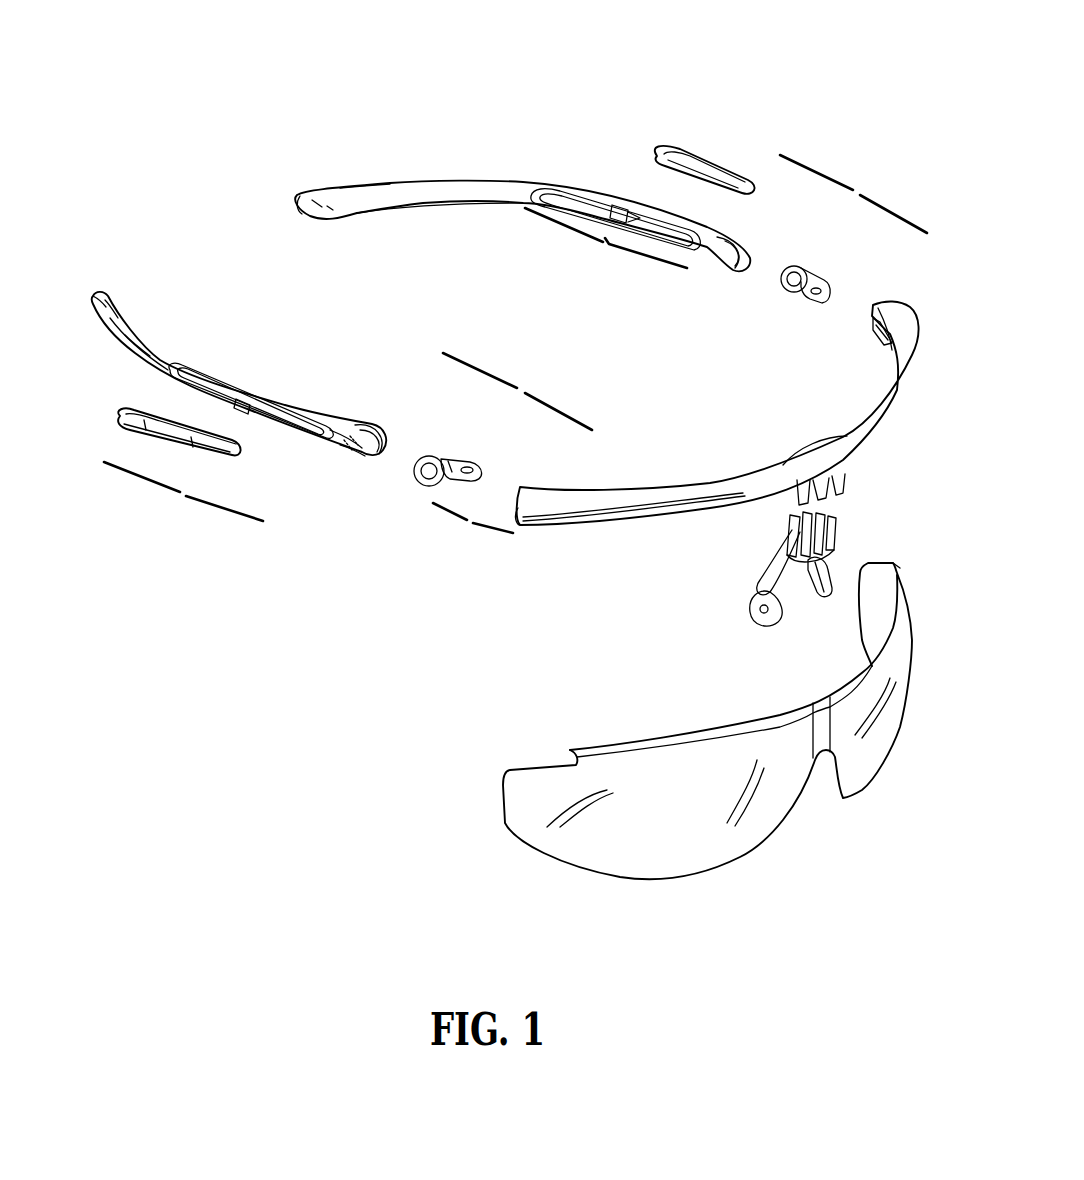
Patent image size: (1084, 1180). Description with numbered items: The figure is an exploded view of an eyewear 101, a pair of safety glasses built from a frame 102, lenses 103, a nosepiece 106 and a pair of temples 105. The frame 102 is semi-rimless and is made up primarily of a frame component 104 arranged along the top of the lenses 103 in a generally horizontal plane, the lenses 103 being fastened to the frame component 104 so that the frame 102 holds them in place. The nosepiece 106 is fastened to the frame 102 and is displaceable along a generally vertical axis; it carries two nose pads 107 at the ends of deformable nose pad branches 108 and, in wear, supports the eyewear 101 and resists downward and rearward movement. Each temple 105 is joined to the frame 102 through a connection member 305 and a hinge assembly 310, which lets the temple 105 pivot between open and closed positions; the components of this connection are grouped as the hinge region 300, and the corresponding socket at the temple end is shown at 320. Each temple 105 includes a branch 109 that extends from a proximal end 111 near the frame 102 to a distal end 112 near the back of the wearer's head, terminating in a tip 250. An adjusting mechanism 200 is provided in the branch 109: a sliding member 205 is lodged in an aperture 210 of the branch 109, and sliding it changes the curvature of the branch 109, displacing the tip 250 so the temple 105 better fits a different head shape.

The eyewear 101 is at (744, 69).
The frame 102 is at (902, 386).
The lenses 103 is at (874, 746).
The frame component 104 is at (876, 424).
The temples 105 is at (382, 190).
The nosepiece 106 is at (830, 555).
The nose pads 107 is at (807, 590).
The nose pad branches 108 is at (787, 575).
The branch 109 is at (445, 194).
The proximal end 111 is at (342, 445).
The distal end 112 is at (112, 318).
The adjusting mechanism 200 is at (395, 369).
The sliding member 205 is at (735, 170).
The aperture 210 is at (612, 207).
The tip 250 is at (305, 212).
The hinge assembly 300 is at (685, 292).
The connection member 305 is at (802, 268).
The hinge assembly 310 is at (473, 528).
The temple hinge socket 320 is at (705, 260).